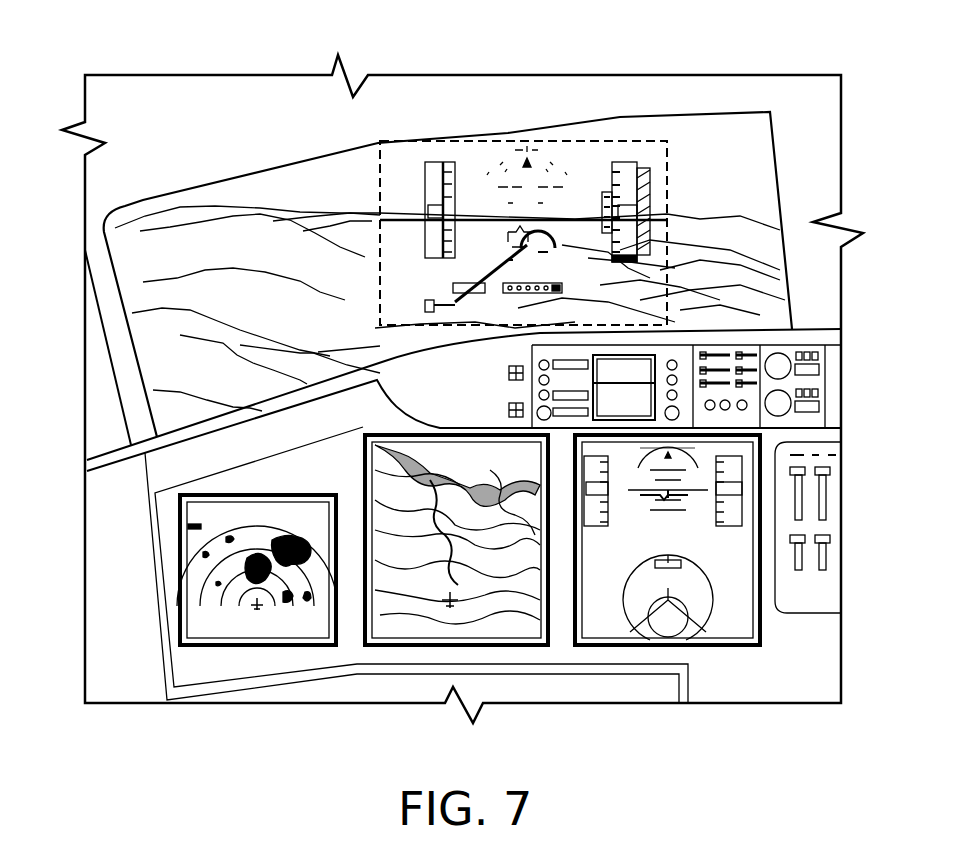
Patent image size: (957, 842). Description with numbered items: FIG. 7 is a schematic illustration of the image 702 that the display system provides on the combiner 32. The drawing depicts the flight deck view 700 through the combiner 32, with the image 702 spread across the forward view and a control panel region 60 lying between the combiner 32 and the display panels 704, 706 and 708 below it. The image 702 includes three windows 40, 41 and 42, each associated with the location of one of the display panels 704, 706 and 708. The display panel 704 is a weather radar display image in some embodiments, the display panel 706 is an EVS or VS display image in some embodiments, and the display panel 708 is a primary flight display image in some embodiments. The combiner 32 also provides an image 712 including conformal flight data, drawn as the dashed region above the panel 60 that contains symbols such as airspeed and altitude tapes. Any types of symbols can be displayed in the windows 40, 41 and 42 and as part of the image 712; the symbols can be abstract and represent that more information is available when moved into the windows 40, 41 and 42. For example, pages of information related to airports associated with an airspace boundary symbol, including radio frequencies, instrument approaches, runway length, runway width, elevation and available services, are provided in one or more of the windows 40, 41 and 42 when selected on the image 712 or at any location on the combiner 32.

The flight deck display system 700 is at (798, 75).
The image 702 is at (650, 88).
The image including conformal flight data 712 is at (510, 140).
The combiner 32 is at (841, 120).
The control panel / glareshield 60 is at (818, 329).
The window 40 is at (173, 630).
The display panel 704 is at (233, 630).
The display panel 706 is at (393, 635).
The window 41 is at (455, 601).
The window 42 is at (745, 600).
The display panel 708 is at (742, 622).